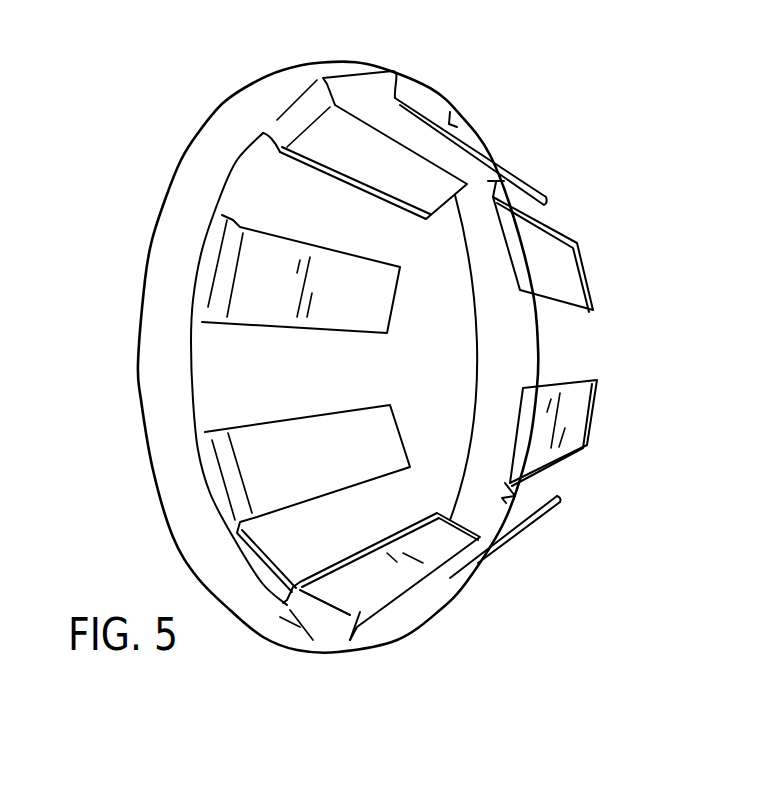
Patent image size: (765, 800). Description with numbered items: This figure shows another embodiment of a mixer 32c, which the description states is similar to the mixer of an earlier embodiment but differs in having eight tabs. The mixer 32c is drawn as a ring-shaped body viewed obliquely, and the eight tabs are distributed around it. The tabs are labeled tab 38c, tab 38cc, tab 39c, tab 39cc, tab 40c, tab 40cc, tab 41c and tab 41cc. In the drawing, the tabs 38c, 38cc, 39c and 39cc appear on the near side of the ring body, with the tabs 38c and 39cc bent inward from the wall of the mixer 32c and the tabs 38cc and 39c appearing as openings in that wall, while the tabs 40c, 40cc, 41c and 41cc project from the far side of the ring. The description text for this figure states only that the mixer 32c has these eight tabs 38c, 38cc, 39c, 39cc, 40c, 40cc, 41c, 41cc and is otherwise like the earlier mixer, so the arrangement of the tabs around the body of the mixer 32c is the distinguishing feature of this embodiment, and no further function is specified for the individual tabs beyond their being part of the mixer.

The mixer 32c is at (315, 60).
The tab 38c is at (384, 172).
The tab 38cc is at (377, 307).
The tab 39c is at (338, 471).
The tab 39cc is at (379, 601).
The tab 41cc is at (490, 158).
The tab 41c is at (550, 257).
The tab 40cc is at (580, 408).
The tab 40c is at (507, 543).